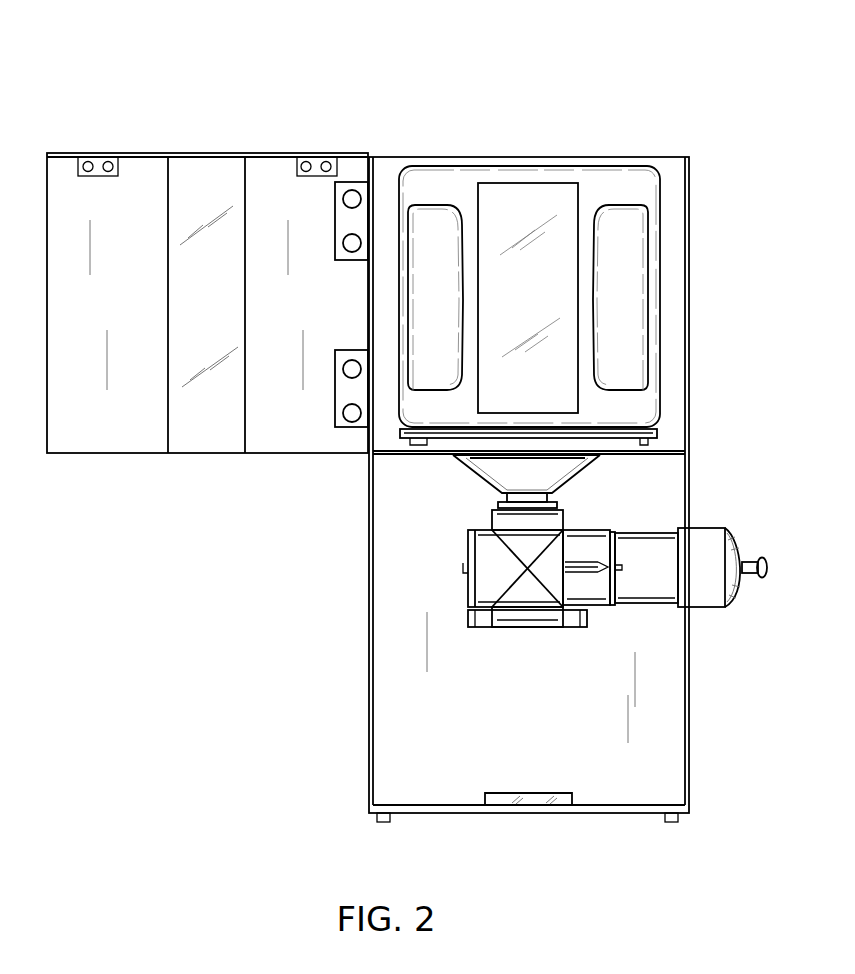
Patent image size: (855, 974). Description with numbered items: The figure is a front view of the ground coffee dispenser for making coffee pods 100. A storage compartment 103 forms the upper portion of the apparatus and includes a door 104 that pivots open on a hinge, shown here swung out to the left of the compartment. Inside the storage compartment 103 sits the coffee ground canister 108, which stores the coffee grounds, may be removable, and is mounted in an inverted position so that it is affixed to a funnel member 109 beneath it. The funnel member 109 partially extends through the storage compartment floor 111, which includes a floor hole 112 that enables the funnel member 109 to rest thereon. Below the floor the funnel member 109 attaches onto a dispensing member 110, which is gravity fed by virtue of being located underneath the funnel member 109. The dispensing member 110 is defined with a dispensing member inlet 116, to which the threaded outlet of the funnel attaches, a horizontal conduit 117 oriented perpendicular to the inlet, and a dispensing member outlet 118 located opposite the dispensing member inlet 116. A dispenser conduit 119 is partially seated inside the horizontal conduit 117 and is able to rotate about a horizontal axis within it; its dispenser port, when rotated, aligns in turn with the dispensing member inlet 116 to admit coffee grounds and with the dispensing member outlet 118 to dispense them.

The ground coffee dispenser for making coffee pods 100 is at (165, 98).
The storage compartment 103 is at (637, 150).
The door 104 is at (62, 187).
The coffee ground canister 108 is at (628, 295).
The funnel member 109 is at (482, 473).
The dispensing member 110 is at (480, 553).
The storage compartment floor 111 is at (665, 448).
The floor hole 112 is at (533, 452).
The dispensing member inlet 116 is at (550, 523).
The horizontal conduit 117 is at (595, 597).
The dispensing member outlet 118 is at (522, 592).
The dispenser conduit 119 is at (655, 593).